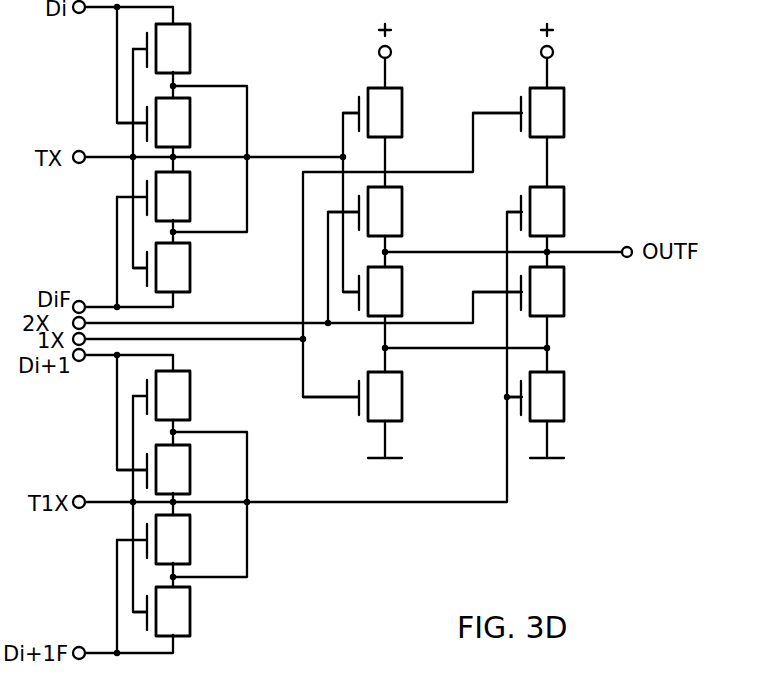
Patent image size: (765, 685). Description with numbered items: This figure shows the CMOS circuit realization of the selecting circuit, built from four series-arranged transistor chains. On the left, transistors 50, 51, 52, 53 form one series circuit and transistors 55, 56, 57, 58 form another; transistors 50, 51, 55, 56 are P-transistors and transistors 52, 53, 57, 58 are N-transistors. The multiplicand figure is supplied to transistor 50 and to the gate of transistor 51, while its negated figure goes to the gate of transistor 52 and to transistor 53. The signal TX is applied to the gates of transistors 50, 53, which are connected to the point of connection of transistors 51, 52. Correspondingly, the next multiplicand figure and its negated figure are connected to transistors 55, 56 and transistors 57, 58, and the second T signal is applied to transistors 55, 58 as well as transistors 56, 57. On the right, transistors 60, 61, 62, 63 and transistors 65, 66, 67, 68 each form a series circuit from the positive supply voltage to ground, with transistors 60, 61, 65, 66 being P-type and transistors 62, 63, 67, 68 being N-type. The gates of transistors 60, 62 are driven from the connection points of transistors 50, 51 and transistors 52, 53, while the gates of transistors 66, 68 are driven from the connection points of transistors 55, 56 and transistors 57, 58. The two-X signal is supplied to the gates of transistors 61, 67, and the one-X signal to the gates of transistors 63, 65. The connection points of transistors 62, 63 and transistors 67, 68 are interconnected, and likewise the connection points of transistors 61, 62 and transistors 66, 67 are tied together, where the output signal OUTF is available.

The transistor 50 is at (192, 47).
The transistor 51 is at (192, 125).
The transistor 52 is at (192, 197).
The transistor 53 is at (182, 283).
The transistor 55 is at (192, 395).
The transistor 56 is at (190, 480).
The transistor 57 is at (192, 545).
The transistor 58 is at (192, 625).
The transistor 60 is at (402, 110).
The transistor 61 is at (402, 227).
The transistor 62 is at (402, 302).
The transistor 63 is at (405, 410).
The transistor 65 is at (564, 120).
The transistor 66 is at (564, 217).
The transistor 67 is at (564, 308).
The transistor 68 is at (564, 410).